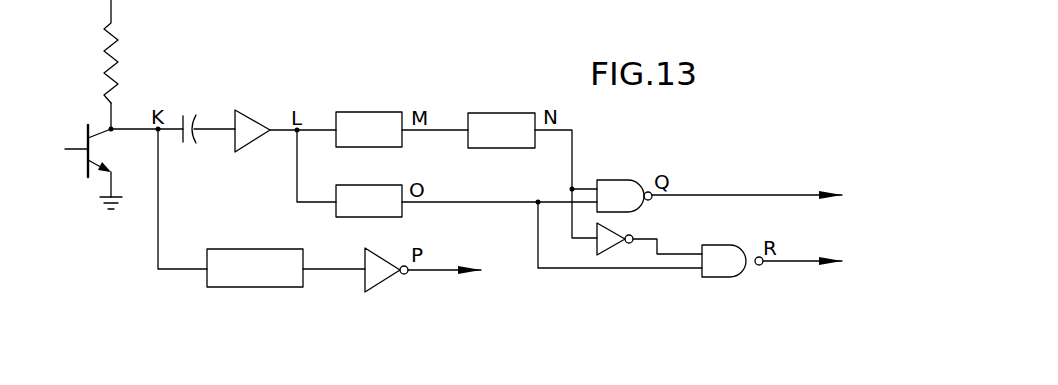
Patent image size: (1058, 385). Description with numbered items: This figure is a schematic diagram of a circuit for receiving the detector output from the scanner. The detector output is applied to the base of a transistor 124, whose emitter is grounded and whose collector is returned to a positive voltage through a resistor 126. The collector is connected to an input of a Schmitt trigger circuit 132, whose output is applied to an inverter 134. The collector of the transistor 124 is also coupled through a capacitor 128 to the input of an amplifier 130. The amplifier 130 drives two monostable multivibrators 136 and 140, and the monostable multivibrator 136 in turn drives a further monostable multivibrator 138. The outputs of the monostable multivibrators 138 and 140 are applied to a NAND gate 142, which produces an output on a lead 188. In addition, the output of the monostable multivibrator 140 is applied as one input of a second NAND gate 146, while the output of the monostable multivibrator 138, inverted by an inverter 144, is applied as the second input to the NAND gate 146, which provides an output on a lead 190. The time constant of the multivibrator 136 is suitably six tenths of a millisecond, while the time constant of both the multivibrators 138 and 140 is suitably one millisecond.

The transistor 124 is at (85, 146).
The resistor 126 is at (112, 53).
The capacitor 128 is at (186, 112).
The amplifier 130 is at (252, 110).
The Schmitt trigger circuit 132 is at (225, 288).
The inverter 134 is at (385, 280).
The monostable multivibrator 136 is at (372, 112).
The monostable multivibrator 138 is at (501, 113).
The monostable multivibrator 140 is at (384, 186).
The NAND gate 142 is at (624, 180).
The inverter 144 is at (615, 250).
The NAND gate 146 is at (726, 277).
The lead 188 is at (797, 194).
The lead 190 is at (805, 261).